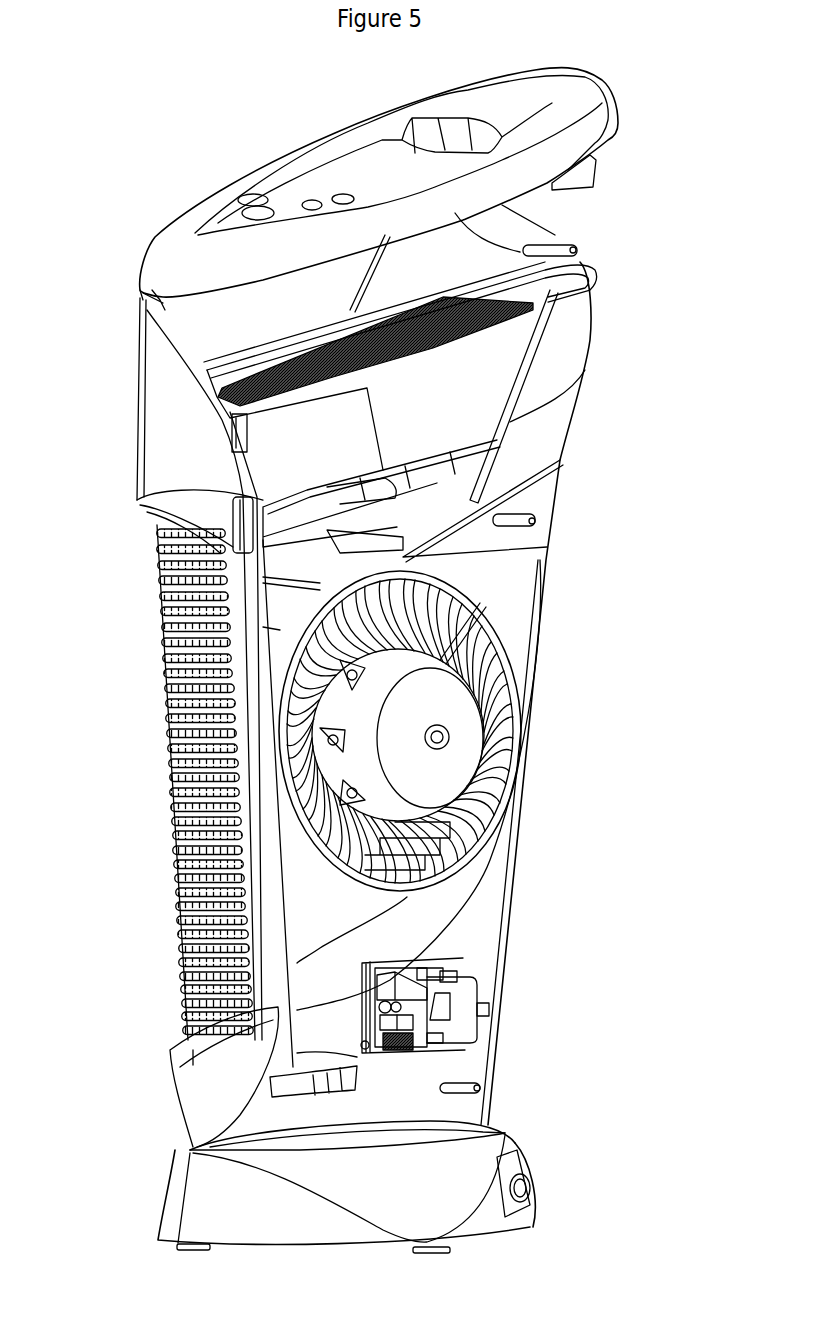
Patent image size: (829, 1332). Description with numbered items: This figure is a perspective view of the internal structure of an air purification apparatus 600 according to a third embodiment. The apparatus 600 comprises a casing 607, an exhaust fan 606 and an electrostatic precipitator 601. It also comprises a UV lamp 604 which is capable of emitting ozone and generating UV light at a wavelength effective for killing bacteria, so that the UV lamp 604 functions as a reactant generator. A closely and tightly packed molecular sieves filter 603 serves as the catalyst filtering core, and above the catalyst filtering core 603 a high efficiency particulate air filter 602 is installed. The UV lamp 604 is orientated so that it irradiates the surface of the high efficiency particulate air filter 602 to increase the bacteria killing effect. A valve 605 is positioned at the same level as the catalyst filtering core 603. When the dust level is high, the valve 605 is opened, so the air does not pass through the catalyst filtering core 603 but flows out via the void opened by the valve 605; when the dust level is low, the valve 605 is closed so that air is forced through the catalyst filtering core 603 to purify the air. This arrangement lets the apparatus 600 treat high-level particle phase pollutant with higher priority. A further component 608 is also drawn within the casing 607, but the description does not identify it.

The apparatus 600 is at (175, 160).
The electrostatic precipitator 601 is at (463, 366).
The high efficiency particulate air filter 602 is at (530, 430).
The molecular sieves filter 603 is at (500, 487).
The UV lamp 604 is at (137, 511).
The valve 605 is at (153, 573).
The exhaust fan 606 is at (505, 664).
The casing 607 is at (507, 920).
The pump 608 is at (460, 1015).